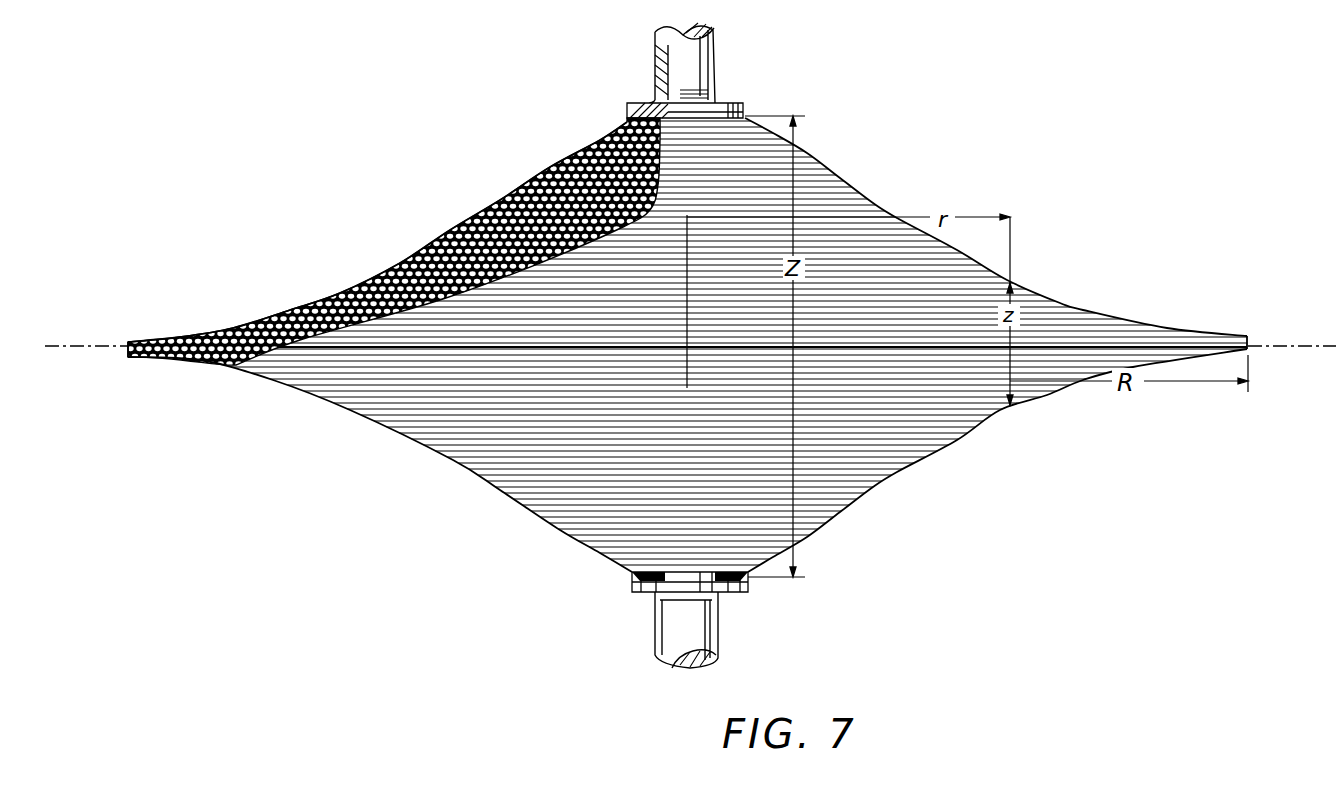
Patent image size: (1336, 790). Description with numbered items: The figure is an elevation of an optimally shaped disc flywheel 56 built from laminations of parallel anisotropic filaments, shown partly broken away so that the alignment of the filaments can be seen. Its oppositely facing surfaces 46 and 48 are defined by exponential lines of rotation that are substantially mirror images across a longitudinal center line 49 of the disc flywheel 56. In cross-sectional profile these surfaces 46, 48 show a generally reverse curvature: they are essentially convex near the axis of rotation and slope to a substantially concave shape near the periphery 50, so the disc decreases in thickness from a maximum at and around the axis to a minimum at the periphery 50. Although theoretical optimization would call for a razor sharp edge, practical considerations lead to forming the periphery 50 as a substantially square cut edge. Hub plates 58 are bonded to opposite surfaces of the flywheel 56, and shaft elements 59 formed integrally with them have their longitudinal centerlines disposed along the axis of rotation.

The oppositely facing surface 46 is at (1085, 310).
The oppositely facing surface 48 is at (905, 462).
The longitudinal center line 49 is at (1330, 345).
The periphery 50 is at (127, 343).
The disc flywheel 56 is at (697, 345).
The hub plate 58 is at (735, 105).
The shaft element 59 is at (710, 48).